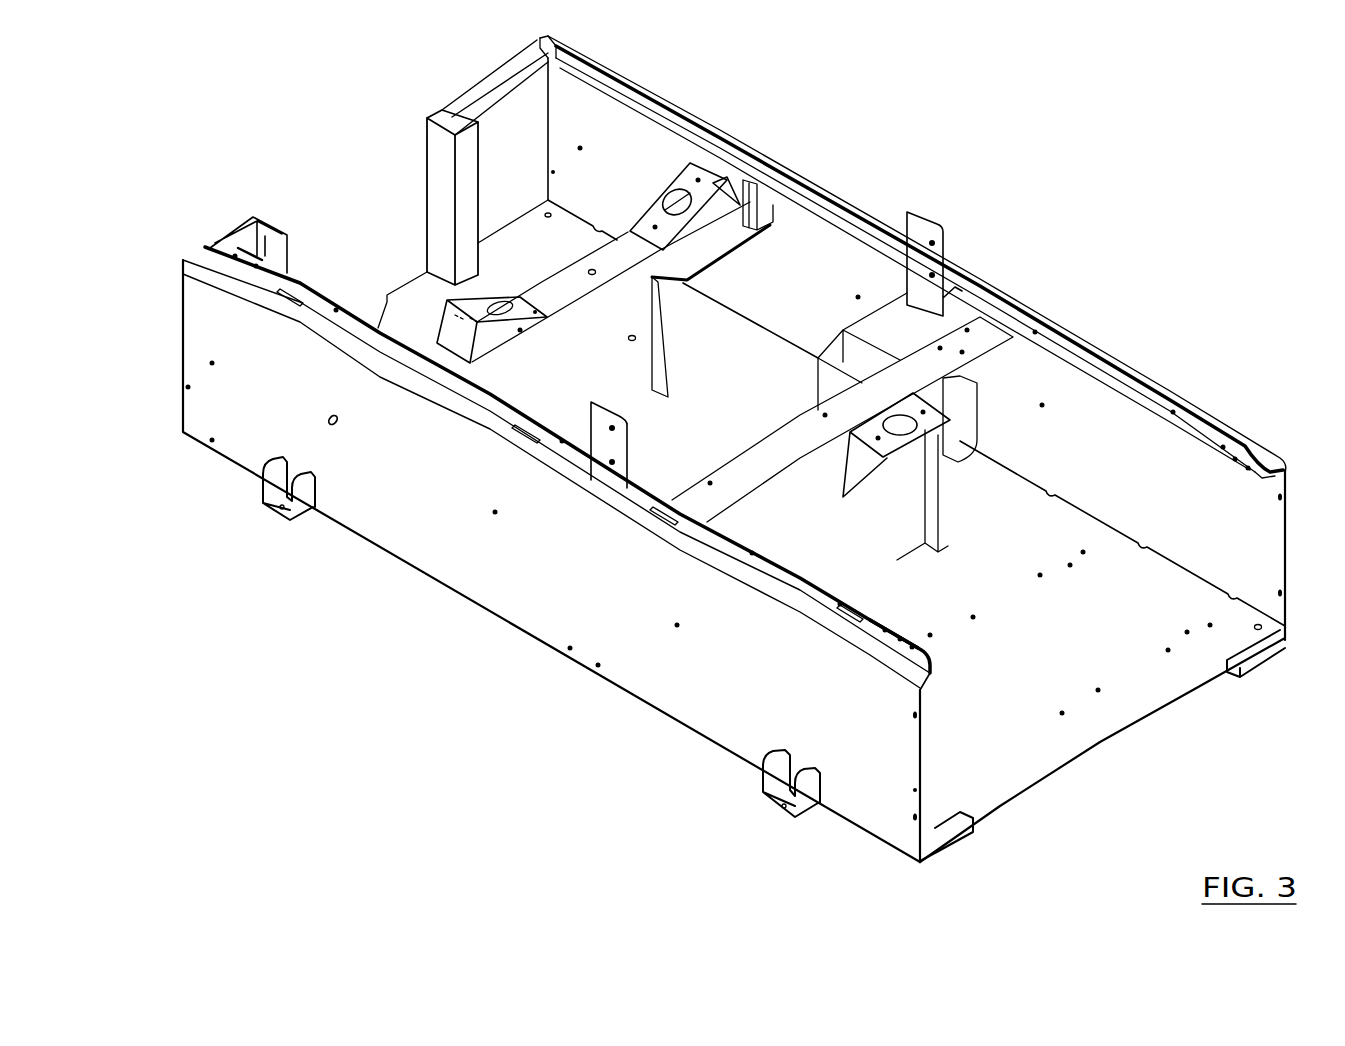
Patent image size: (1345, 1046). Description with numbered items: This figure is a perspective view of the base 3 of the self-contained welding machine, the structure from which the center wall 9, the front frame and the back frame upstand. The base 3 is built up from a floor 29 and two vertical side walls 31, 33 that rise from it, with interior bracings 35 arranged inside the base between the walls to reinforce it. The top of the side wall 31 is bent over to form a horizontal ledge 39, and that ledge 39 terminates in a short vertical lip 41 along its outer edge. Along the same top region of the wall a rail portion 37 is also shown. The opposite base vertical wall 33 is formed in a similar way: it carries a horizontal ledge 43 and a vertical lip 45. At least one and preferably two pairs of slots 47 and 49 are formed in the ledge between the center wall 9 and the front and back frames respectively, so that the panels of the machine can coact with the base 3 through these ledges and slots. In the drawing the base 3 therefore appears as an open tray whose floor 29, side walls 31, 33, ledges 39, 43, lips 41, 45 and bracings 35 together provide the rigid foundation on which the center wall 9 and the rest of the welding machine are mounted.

The base 3 is at (633, 705).
The center wall 9 is at (620, 447).
The floor 29 is at (1003, 743).
The vertical side wall 31 is at (737, 723).
The vertical side wall 33 is at (1164, 491).
The interior bracings 35 is at (571, 378).
The front top rail 37 is at (807, 627).
The horizontal ledge 39 is at (893, 662).
The vertical lip 41 is at (873, 627).
The horizontal ledge 43 is at (1263, 465).
The vertical lip 45 is at (1085, 370).
The slots 47 is at (663, 520).
The slots 49 is at (285, 302).